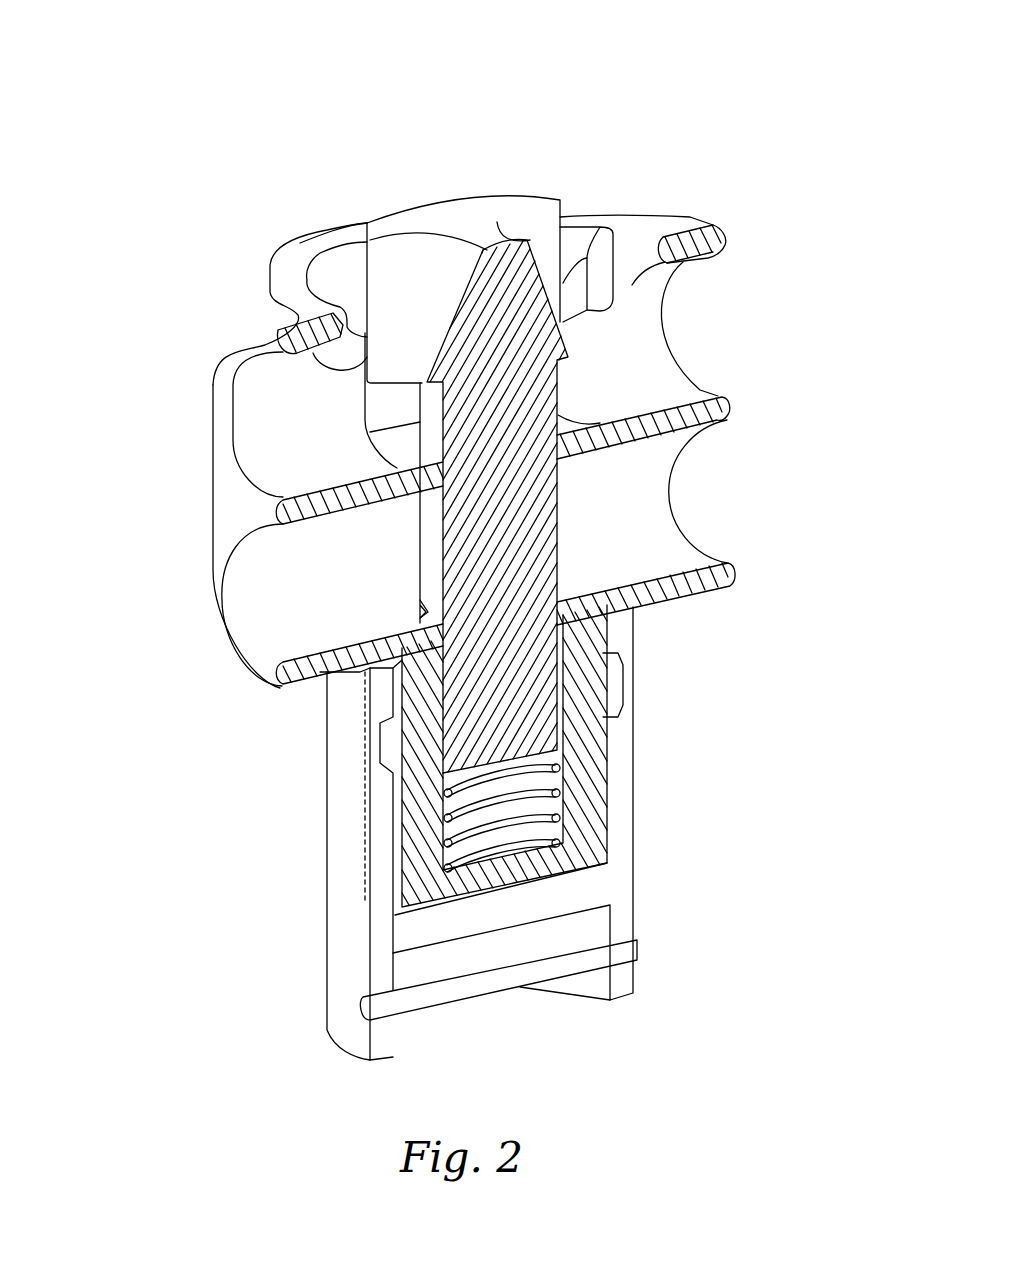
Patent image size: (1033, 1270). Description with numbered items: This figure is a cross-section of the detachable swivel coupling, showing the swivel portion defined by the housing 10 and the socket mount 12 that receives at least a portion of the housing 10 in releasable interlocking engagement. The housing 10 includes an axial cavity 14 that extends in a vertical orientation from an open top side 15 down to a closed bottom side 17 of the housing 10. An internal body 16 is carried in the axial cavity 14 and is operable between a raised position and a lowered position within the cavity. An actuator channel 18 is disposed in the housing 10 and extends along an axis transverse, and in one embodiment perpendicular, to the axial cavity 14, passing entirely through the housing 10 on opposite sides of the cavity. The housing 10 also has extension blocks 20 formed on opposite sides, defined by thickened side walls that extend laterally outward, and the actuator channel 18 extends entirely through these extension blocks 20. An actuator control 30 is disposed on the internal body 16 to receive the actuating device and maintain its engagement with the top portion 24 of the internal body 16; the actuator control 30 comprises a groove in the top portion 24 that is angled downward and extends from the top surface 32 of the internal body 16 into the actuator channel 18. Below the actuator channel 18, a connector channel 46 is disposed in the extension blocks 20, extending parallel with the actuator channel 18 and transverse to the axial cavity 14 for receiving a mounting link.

The housing 10 is at (273, 262).
The socket mount 12 is at (343, 905).
The axial cavity 14 is at (528, 775).
The open top side 15 is at (349, 260).
The internal body 16 is at (510, 272).
The closed bottom side 17 is at (520, 872).
The actuator channel 18 is at (266, 400).
The extension blocks 20 is at (227, 485).
The top portion 24 is at (452, 212).
The actuator control 30 is at (347, 238).
The top surface 32 is at (398, 268).
The connector channel 46 is at (270, 580).